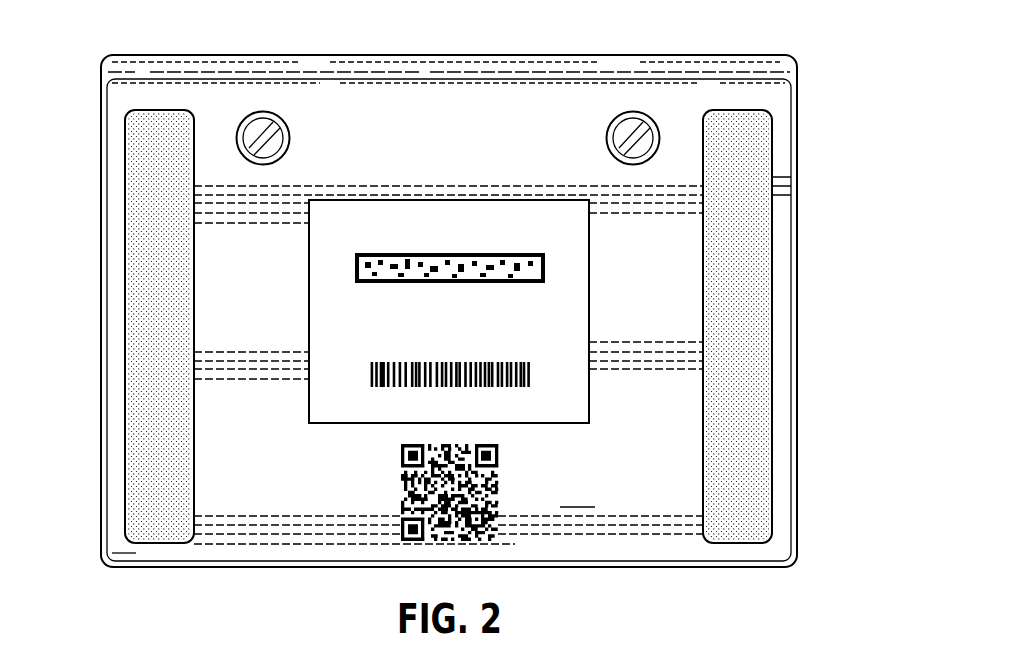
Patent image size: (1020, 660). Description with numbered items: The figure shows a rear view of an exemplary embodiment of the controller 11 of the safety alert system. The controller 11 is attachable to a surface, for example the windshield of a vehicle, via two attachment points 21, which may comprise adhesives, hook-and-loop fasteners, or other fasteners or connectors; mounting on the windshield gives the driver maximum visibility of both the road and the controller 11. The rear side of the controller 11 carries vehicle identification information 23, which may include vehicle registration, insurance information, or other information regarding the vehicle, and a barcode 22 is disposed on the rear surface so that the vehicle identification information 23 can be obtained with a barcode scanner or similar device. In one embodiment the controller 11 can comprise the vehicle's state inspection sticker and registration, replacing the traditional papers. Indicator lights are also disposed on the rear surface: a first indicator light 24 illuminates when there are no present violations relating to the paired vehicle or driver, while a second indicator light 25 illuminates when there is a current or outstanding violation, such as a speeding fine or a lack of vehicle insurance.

The controller 11 is at (822, 47).
The attachment points 21 is at (137, 290).
The barcode 22 is at (496, 450).
The vehicle identification information 23 is at (333, 261).
The first indicator light 24 is at (258, 112).
The second indicator light 25 is at (628, 112).